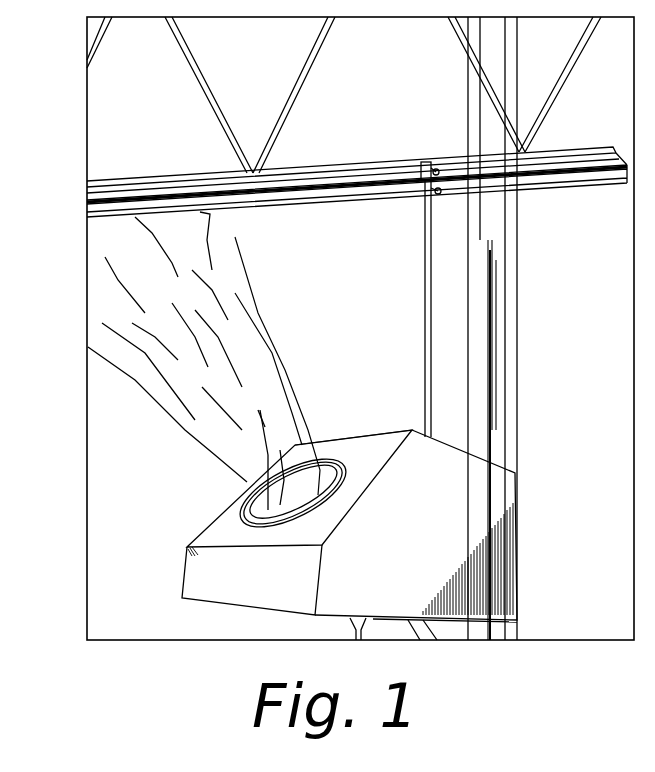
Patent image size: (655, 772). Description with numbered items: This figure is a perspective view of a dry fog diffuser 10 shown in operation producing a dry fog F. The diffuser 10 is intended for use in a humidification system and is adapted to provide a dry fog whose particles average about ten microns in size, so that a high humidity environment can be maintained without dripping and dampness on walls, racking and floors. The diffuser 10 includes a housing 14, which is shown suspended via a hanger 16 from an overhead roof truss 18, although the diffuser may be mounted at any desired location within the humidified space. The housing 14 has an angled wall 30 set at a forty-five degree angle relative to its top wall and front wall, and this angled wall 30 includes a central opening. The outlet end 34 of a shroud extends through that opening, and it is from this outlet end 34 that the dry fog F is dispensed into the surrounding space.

The fume extraction hood system 10 is at (402, 490).
The hood housing 14 is at (497, 498).
The support post 16 is at (425, 235).
The support rail beam 18 is at (342, 170).
The inlet opening 30 is at (337, 452).
The top inlet plate 34 is at (347, 447).
The fume flow F is at (280, 317).